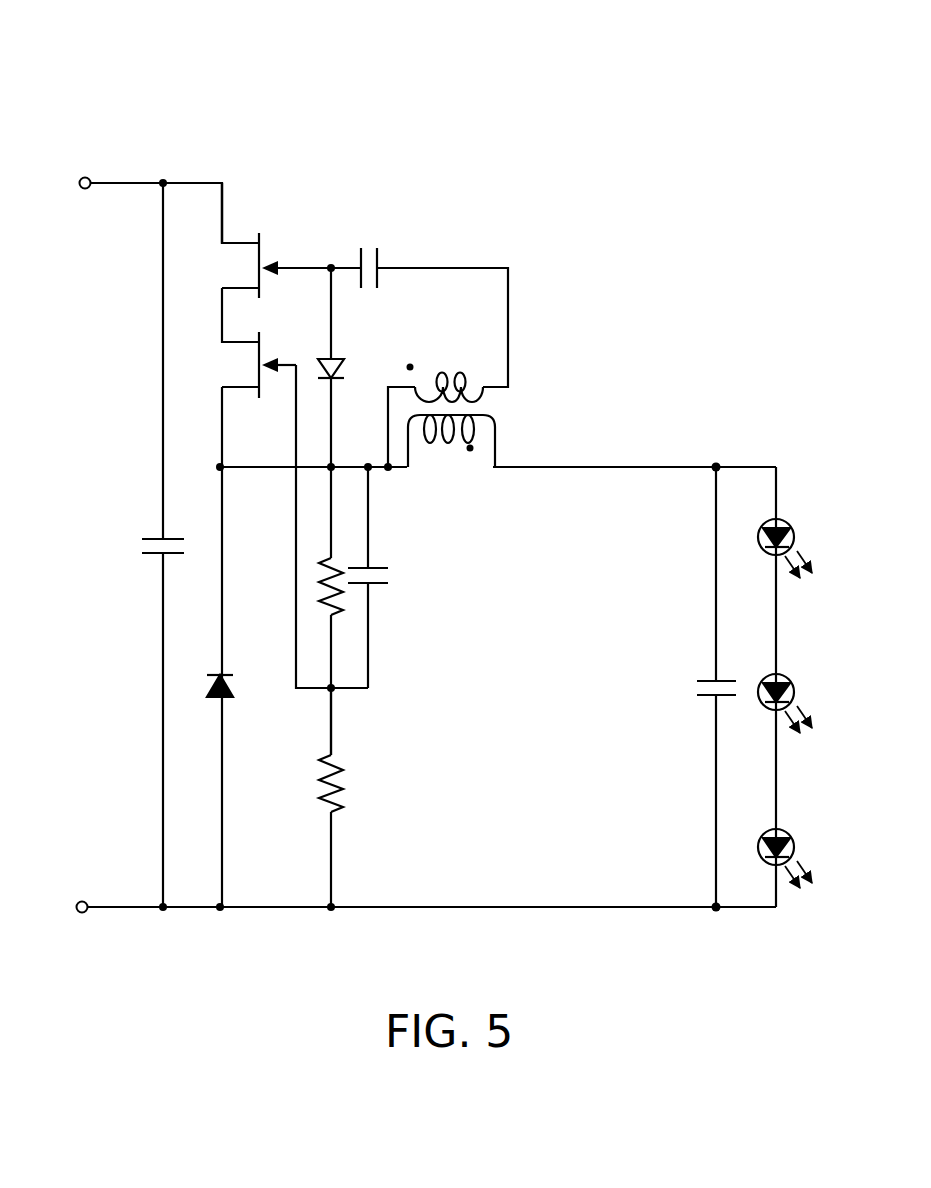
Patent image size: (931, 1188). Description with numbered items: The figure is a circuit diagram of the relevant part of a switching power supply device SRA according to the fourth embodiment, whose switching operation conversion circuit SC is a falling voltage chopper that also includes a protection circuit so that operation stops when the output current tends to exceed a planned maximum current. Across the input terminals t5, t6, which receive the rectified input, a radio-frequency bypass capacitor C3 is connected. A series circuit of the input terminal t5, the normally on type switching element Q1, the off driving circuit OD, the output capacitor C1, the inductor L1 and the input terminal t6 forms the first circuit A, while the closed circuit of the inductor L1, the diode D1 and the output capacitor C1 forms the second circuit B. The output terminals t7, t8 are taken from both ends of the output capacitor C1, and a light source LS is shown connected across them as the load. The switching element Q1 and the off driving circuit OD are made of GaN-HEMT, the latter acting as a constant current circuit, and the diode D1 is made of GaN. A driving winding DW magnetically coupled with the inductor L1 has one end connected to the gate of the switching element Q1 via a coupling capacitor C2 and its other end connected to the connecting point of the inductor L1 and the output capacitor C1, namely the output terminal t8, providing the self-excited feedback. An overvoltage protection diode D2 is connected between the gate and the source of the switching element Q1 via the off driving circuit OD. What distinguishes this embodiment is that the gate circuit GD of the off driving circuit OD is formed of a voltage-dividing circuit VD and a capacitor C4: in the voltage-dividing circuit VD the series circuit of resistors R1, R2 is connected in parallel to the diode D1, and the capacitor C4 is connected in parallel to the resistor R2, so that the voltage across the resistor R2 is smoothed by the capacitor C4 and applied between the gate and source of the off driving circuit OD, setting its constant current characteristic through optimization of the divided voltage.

The switching power supply device SRA is at (403, 36).
The switching operation conversion circuit SC is at (240, 165).
The input terminal t5 is at (85, 177).
The input terminal t6 is at (83, 913).
The output terminal t7 is at (717, 463).
The output terminal t8 is at (715, 915).
The first circuit A is at (192, 213).
The second circuit B is at (243, 493).
The normally on type switching element Q1 is at (243, 266).
The off driving circuit OD is at (243, 365).
The coupling capacitor C2 is at (368, 248).
The overvoltage protection diode D2 is at (343, 358).
The driving winding DW is at (443, 372).
The inductor L1 is at (452, 445).
The radio-frequency bypass capacitor C3 is at (143, 547).
The resistor R2 is at (320, 592).
The capacitor C4 is at (386, 575).
The gate circuit GD is at (410, 643).
The voltage-dividing circuit VD is at (340, 708).
The resistor R1 is at (338, 778).
The diode D1 is at (230, 685).
The output capacitor C1 is at (695, 688).
The light source (LEDs) LS is at (795, 527).